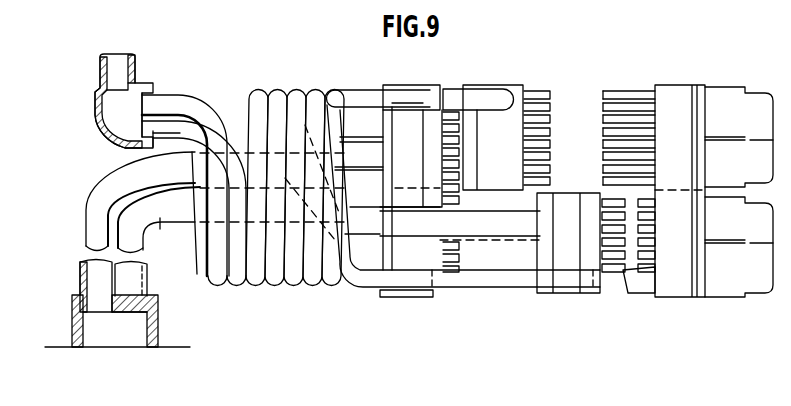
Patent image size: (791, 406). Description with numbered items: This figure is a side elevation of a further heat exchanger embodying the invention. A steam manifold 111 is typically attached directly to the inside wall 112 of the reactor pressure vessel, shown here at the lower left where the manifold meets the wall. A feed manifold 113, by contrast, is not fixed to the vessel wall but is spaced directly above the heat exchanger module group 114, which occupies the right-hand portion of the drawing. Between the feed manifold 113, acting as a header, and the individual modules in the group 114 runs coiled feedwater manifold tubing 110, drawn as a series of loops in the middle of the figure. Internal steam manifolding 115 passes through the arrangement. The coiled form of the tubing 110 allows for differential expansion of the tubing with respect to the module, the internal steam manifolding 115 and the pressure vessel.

The coiled feedwater manifold tubing 110 is at (293, 268).
The steam manifold 111 is at (73, 324).
The inside wall 112 is at (190, 347).
The feed manifold 113 is at (106, 119).
The heat exchanger module group 114 is at (655, 258).
The internal steam manifolding 115 is at (158, 224).